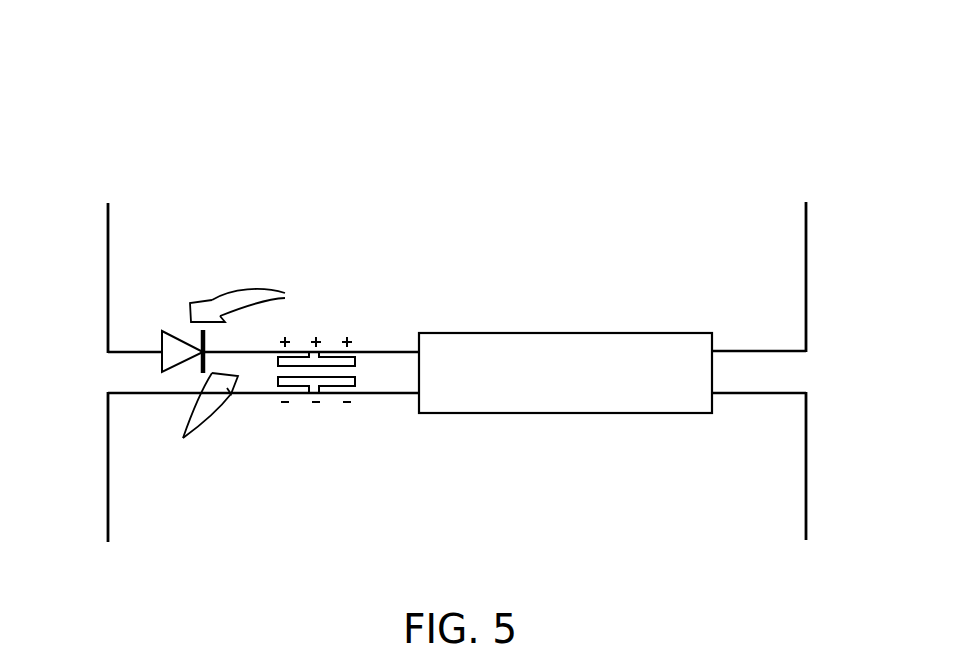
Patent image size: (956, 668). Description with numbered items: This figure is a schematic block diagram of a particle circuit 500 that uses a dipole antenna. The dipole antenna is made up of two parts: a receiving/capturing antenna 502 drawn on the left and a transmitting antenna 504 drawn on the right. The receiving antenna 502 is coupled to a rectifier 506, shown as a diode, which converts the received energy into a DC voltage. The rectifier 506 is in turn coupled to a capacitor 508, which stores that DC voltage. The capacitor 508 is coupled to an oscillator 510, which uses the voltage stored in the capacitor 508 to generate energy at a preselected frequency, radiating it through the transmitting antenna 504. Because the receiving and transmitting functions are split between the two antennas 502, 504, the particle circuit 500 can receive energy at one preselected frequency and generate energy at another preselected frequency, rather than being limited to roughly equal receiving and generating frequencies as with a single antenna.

The particle circuit 500 is at (631, 111).
The receiving/capturing antenna 502 is at (108, 272).
The transmitting antenna 504 is at (806, 273).
The rectifier 506 is at (200, 348).
The capacitor 508 is at (362, 352).
The oscillator 510 is at (547, 333).